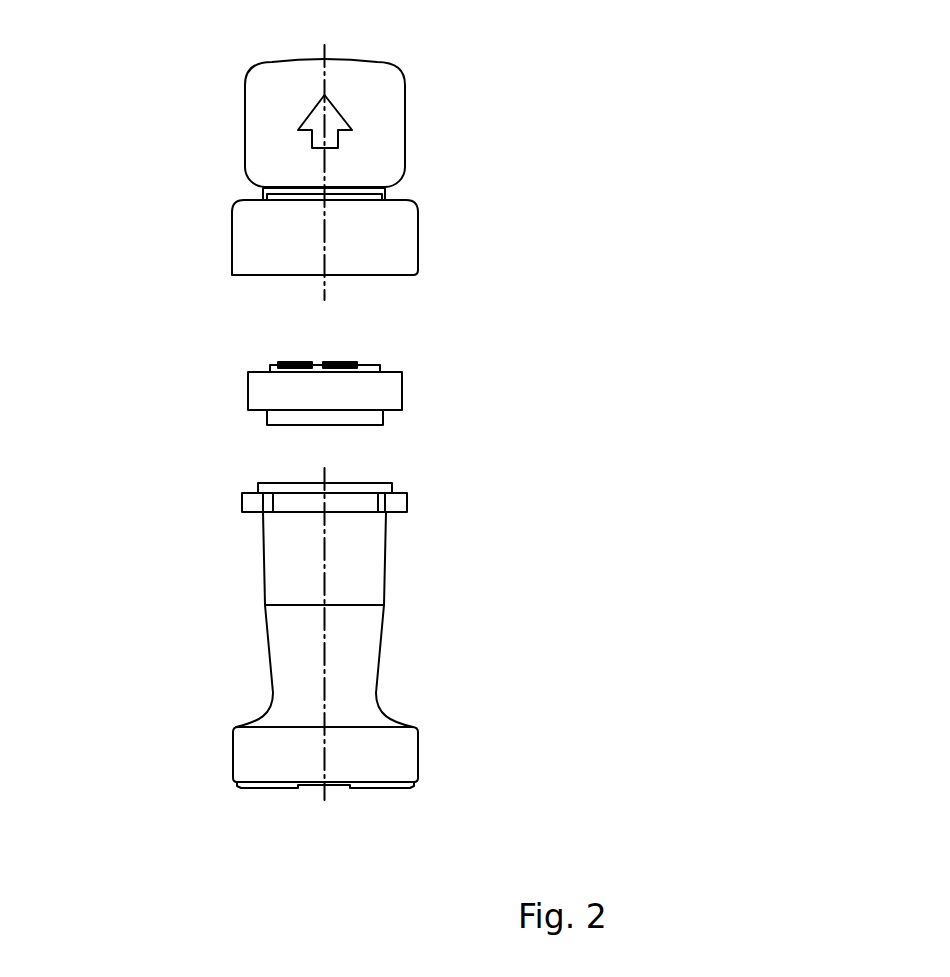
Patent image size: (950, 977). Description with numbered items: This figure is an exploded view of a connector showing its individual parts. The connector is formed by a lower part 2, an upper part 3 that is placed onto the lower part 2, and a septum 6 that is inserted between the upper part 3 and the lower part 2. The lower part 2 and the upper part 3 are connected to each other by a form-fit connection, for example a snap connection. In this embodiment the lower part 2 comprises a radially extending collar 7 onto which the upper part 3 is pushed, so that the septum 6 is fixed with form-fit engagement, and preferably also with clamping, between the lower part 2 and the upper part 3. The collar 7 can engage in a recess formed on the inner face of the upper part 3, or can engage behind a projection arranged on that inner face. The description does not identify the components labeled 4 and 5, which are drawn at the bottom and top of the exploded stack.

The lower part 2 is at (378, 650).
The upper part 3 is at (372, 227).
The base 4 is at (390, 753).
The cap 5 is at (260, 122).
The septum 6 is at (367, 390).
The collar 7 is at (247, 499).